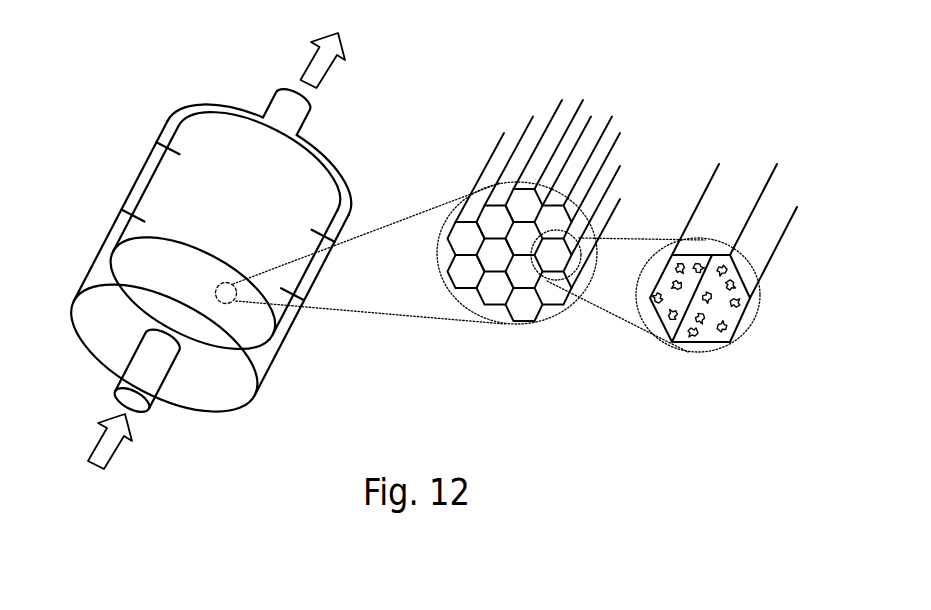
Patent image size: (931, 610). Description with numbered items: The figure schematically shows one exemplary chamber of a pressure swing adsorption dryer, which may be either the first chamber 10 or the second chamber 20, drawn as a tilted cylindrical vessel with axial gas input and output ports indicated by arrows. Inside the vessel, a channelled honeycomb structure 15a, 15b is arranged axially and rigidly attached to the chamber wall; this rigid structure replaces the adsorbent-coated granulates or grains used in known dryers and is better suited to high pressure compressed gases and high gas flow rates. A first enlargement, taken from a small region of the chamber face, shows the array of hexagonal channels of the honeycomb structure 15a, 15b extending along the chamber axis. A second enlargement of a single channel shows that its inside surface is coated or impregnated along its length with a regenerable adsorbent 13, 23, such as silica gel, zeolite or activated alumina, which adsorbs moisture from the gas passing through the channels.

The first chamber 10 is at (278, 251).
The second chamber 20 is at (187, 102).
The first rigid structure 15a is at (538, 249).
The second rigid structure 15b is at (524, 321).
The first regenerable adsorbent 13 is at (678, 276).
The second regenerable adsorbent 23 is at (737, 308).